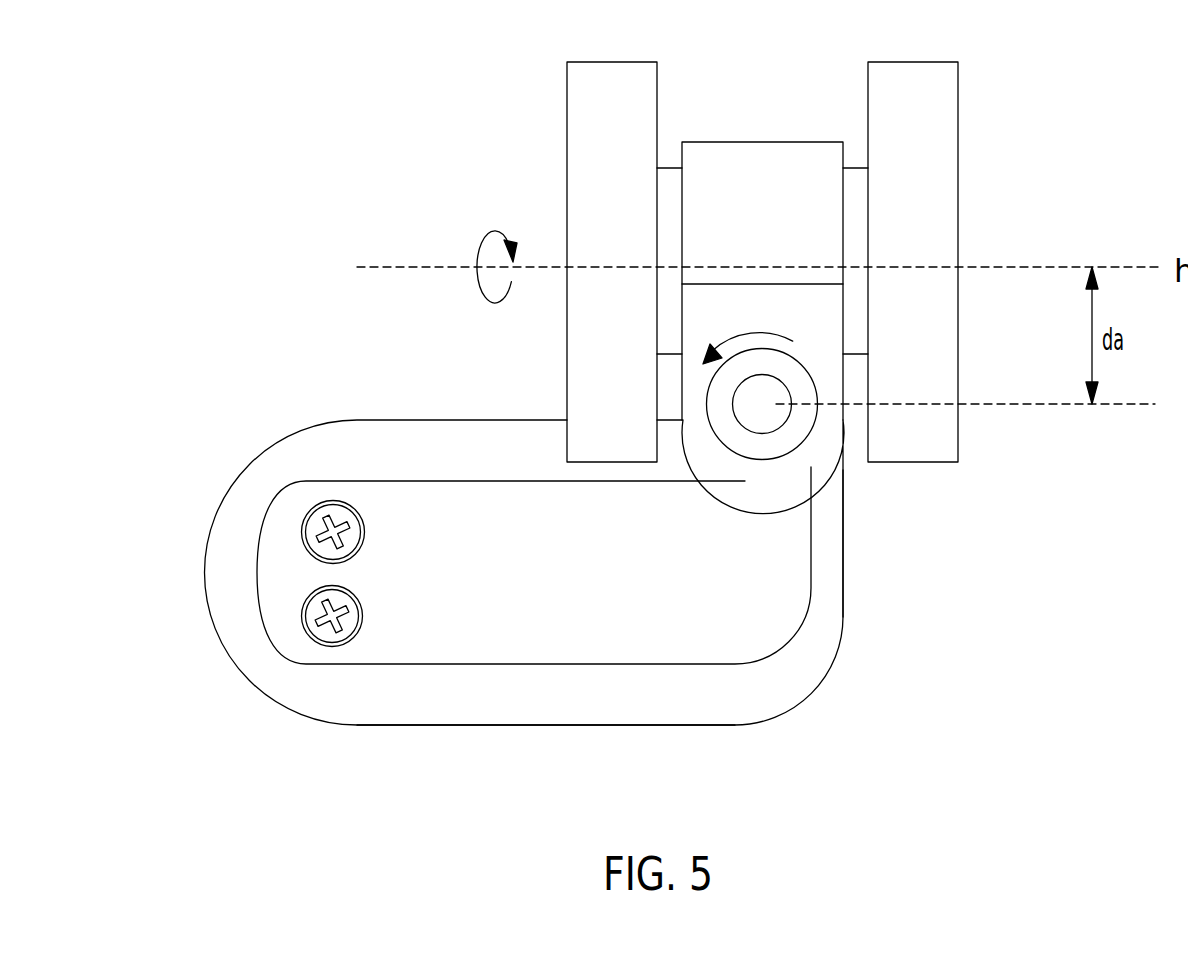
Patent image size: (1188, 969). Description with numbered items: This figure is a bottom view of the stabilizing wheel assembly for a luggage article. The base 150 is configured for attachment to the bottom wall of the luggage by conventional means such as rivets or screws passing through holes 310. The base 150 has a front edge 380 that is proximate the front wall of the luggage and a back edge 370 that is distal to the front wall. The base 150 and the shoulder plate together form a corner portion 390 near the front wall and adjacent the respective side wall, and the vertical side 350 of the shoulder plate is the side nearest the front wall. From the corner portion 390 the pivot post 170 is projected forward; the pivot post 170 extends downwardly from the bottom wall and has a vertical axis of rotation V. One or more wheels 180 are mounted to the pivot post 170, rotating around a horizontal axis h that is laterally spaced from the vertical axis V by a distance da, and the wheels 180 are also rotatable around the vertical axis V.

The wheels 180 is at (582, 127).
The vertical side 350 is at (760, 185).
The pivot post 170 is at (812, 377).
The front edge 380 is at (323, 420).
The back edge 370 is at (365, 725).
The corner portion 390 is at (857, 495).
The base 150 is at (553, 647).
The holes 310 is at (308, 549).